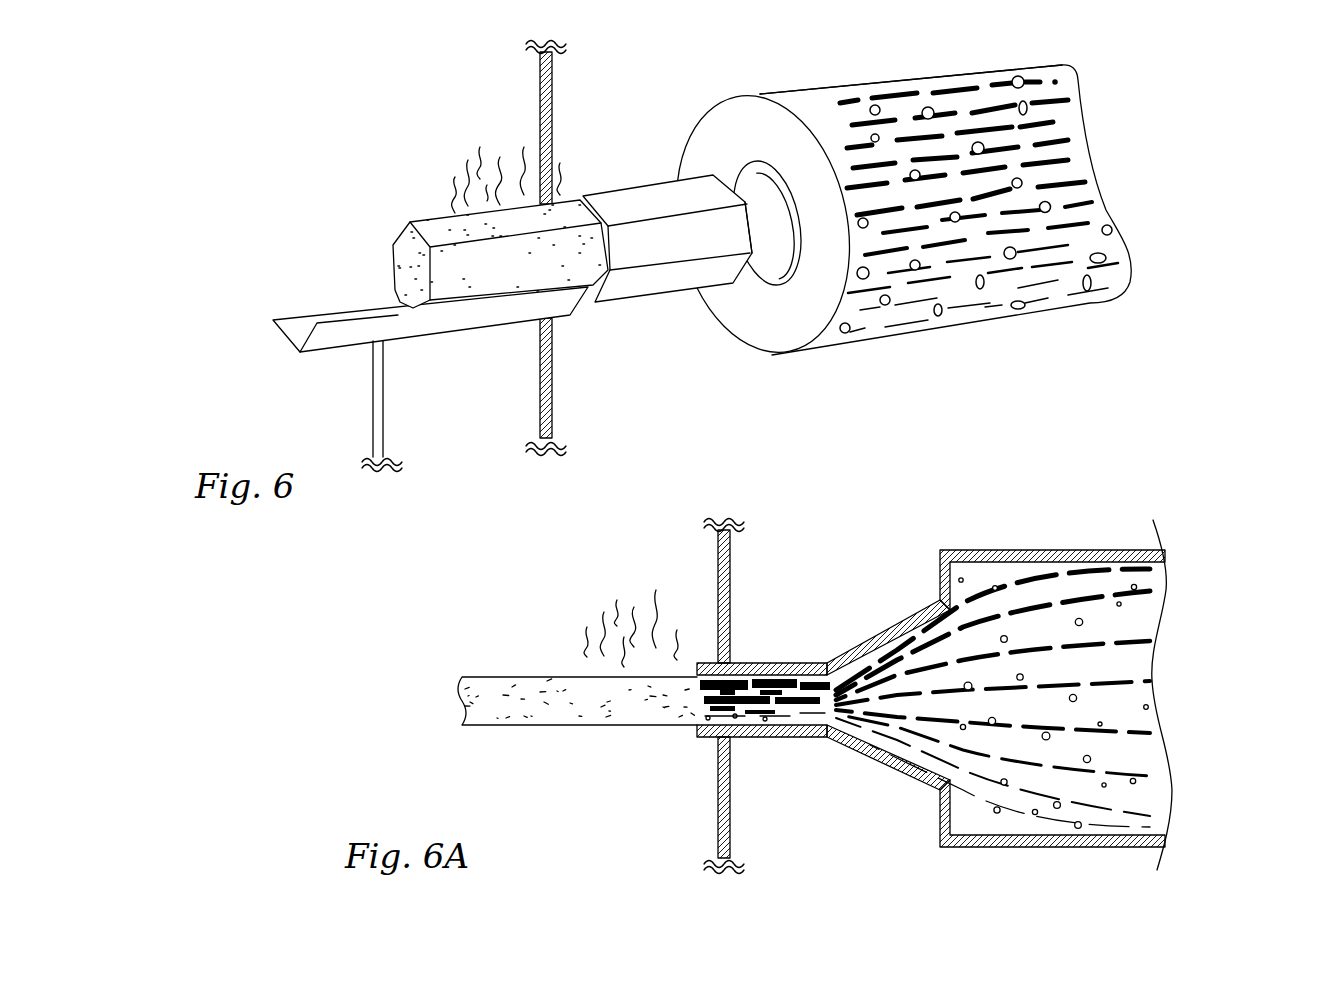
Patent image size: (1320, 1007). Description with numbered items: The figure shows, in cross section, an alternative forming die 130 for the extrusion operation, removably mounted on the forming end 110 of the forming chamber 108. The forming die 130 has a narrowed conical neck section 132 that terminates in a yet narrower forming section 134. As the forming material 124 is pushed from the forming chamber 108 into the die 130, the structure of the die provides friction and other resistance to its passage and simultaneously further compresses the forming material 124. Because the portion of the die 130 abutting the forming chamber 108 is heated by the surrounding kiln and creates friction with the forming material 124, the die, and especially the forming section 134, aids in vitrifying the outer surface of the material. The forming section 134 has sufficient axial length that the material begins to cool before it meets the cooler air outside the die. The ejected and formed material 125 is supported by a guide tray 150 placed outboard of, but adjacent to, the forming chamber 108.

In FIG. 6, the forming chamber 108 is at (983, 102).
In FIG. 6A, the forming chamber 108 is at (1130, 548).
In FIG. 6, the forming end 110 is at (845, 115).
In FIG. 6A, the forming end 110 is at (985, 548).
In FIG. 6, the forming material 124 is at (1077, 195).
In FIG. 6A, the forming material 124 is at (1118, 708).
In FIG. 6, the ejected and formed material 125 is at (480, 263).
In FIG. 6A, the ejected and formed material 125 is at (577, 657).
In FIG. 6, the forming die 130 is at (780, 138).
In FIG. 6, the conical neck section 132 is at (770, 242).
In FIG. 6A, the conical neck section 132 is at (875, 632).
In FIG. 6, the forming section 134 is at (640, 248).
In FIG. 6A, the forming section 134 is at (768, 732).
In FIG. 6, the guide tray 150 is at (358, 333).